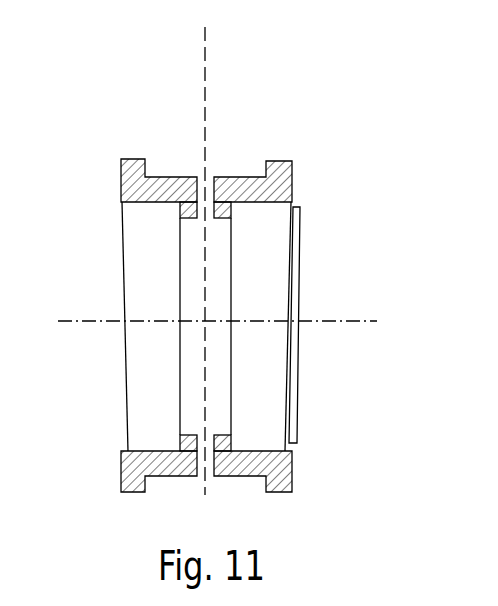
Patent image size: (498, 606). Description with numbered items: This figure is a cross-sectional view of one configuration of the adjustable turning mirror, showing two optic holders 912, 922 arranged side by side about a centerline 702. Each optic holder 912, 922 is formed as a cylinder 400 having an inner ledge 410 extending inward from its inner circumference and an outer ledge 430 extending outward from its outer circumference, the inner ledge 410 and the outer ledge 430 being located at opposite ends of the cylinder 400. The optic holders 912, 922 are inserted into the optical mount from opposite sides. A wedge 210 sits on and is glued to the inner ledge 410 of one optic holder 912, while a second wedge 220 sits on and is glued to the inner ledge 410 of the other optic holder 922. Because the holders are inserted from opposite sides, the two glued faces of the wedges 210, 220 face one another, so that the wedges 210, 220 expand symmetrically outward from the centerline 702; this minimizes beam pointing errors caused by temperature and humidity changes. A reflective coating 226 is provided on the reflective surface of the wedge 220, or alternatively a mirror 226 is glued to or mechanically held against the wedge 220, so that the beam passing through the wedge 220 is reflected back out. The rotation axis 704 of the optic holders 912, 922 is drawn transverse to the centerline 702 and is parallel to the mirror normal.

The centerline 702 is at (205, 66).
The rotation axis 704 is at (342, 323).
The optic holder 912 is at (123, 263).
The optic holder 922 is at (292, 262).
The wedge 210 is at (167, 301).
The wedge 220 is at (273, 301).
The reflective coating 226 is at (298, 312).
The cylinder 400 is at (162, 177).
The inner ledge 410 is at (190, 220).
The outer ledge 430 is at (208, 328).